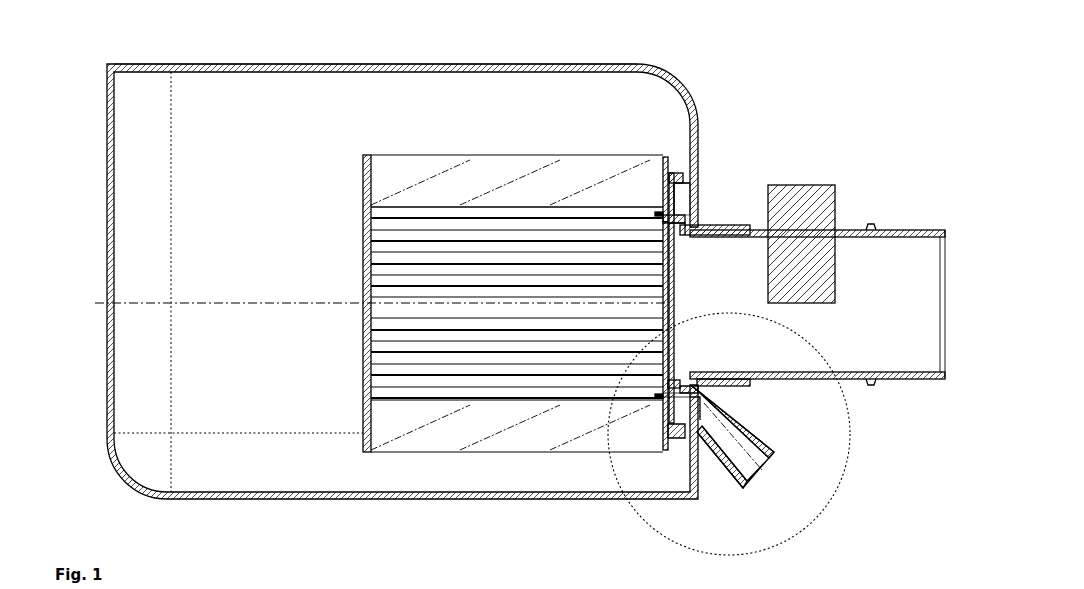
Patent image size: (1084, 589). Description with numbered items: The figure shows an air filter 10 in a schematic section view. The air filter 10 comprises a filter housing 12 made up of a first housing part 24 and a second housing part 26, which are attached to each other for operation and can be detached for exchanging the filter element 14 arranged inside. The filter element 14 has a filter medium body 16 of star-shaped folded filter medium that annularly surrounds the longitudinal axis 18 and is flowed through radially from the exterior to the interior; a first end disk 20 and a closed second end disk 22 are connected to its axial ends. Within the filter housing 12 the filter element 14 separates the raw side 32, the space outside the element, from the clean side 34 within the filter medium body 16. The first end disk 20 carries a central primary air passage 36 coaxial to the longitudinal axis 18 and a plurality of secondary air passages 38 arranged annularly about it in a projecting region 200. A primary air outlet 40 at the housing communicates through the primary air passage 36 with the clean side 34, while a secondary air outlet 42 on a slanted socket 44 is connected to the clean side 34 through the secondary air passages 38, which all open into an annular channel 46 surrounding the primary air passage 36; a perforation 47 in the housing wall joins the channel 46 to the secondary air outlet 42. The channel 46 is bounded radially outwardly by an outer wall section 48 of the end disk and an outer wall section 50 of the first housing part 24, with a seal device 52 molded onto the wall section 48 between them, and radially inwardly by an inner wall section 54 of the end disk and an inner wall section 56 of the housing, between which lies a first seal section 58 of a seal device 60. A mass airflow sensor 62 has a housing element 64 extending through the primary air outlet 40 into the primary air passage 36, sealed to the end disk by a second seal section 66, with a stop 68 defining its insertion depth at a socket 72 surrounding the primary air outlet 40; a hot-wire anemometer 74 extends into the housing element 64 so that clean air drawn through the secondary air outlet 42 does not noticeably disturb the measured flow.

The air filter 10 is at (837, 77).
The filter housing 12 is at (747, 45).
The filter element 14 is at (523, 276).
The filter medium body 16 is at (478, 160).
The longitudinal axis 18 is at (250, 303).
The first end disk 20 is at (653, 289).
The second end disk 22 is at (365, 190).
The first housing part 24 is at (235, 64).
The second housing part 26 is at (107, 147).
The raw side 32 is at (264, 407).
The clean side 34 is at (485, 372).
The primary air passage 36 is at (670, 293).
The secondary air passages 38 is at (660, 214).
The primary air outlet 40 is at (729, 434).
The secondary air outlet 42 is at (765, 465).
The socket 44 is at (753, 436).
The channel 46 is at (694, 200).
The perforation 47 is at (696, 413).
The outer wall section 48 is at (676, 172).
The outer wall section 50 is at (695, 185).
The seal device 52 is at (686, 180).
The inner wall section 54 is at (676, 228).
The inner wall section 56 is at (690, 216).
The first seal section 58 is at (692, 394).
The seal device 60 is at (686, 390).
The mass airflow sensor 62 is at (847, 228).
The housing element 64 is at (852, 380).
The second seal section 66 is at (673, 380).
The stop 68 is at (750, 383).
The socket 72 is at (718, 238).
The hot-wire anemometer 74 is at (832, 270).
The projecting region 200 is at (662, 225).